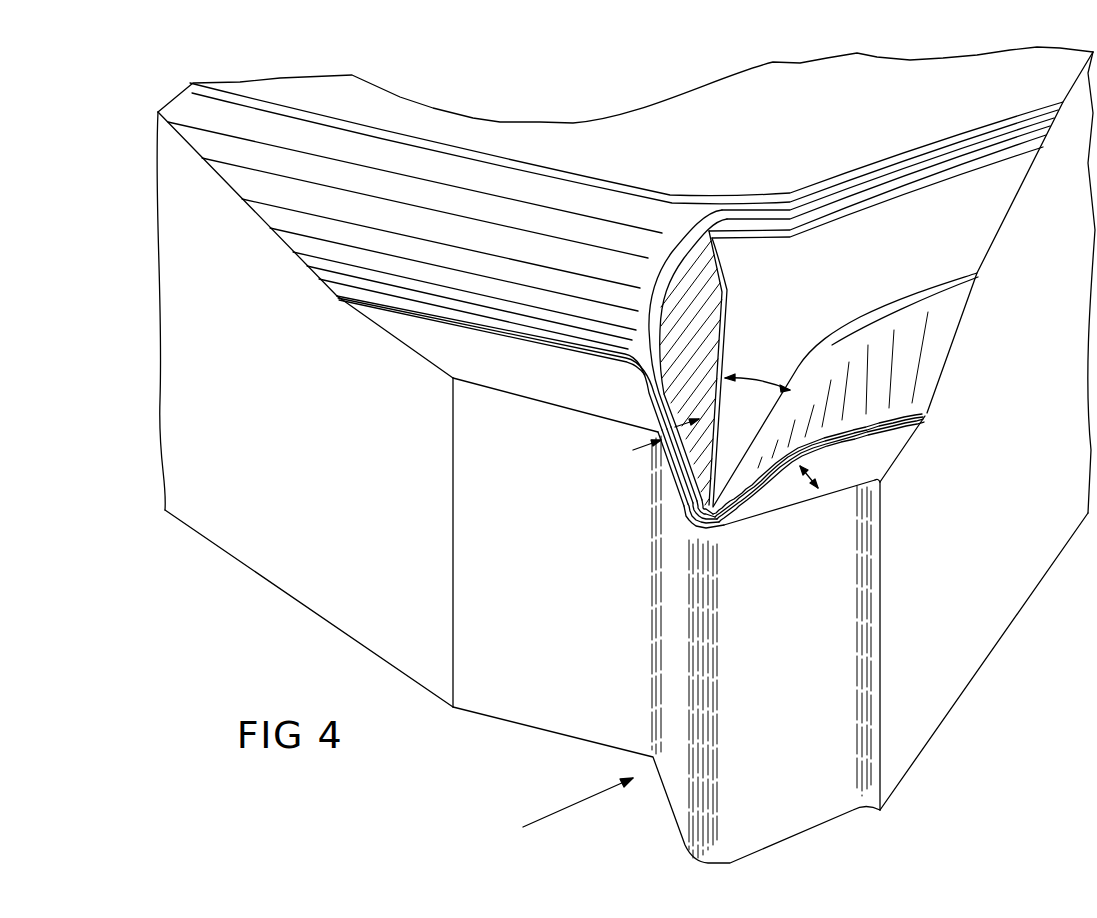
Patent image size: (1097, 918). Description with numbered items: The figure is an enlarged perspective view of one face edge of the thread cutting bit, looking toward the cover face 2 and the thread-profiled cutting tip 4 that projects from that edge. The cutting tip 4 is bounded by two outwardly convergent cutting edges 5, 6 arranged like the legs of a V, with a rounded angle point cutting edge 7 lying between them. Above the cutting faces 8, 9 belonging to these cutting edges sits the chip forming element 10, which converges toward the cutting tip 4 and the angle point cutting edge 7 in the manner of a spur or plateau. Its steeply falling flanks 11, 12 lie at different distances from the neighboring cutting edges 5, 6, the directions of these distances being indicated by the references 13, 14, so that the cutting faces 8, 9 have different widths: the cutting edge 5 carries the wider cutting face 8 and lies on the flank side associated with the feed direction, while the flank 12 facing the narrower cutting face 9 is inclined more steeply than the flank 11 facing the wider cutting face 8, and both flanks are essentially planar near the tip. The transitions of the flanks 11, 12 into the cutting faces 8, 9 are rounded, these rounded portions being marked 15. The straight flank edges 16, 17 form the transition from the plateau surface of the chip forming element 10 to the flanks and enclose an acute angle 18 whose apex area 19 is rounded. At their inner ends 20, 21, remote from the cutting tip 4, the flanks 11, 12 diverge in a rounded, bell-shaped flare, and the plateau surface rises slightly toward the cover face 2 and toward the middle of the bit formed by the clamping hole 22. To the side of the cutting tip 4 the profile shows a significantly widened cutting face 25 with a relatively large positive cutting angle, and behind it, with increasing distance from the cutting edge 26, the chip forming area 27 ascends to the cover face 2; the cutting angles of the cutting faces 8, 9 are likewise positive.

The cover face 2 is at (797, 125).
The cutting tip 4 is at (567, 803).
The cutting edge 5 is at (777, 510).
The cutting edge 6 is at (677, 477).
The angle point cutting edge 7 is at (705, 533).
The cutting face 8 is at (826, 475).
The cutting face 9 is at (633, 450).
The chip forming element 10 is at (879, 235).
The flank 11 is at (887, 368).
The flank 12 is at (693, 337).
The direction of distance 13 is at (810, 480).
The direction of distance 14 is at (655, 425).
The rounded portion 15 is at (880, 430).
The flank edge 16 is at (802, 402).
The flank edge 17 is at (728, 358).
The acute angle 18 is at (750, 390).
The apex area 19 is at (713, 530).
The inner end 20 is at (853, 330).
The inner end 21 is at (723, 280).
The clamping hole 22 is at (534, 98).
The cutting face 25 is at (498, 378).
The cutting edge 26 is at (525, 400).
The chip forming area 27 is at (423, 251).